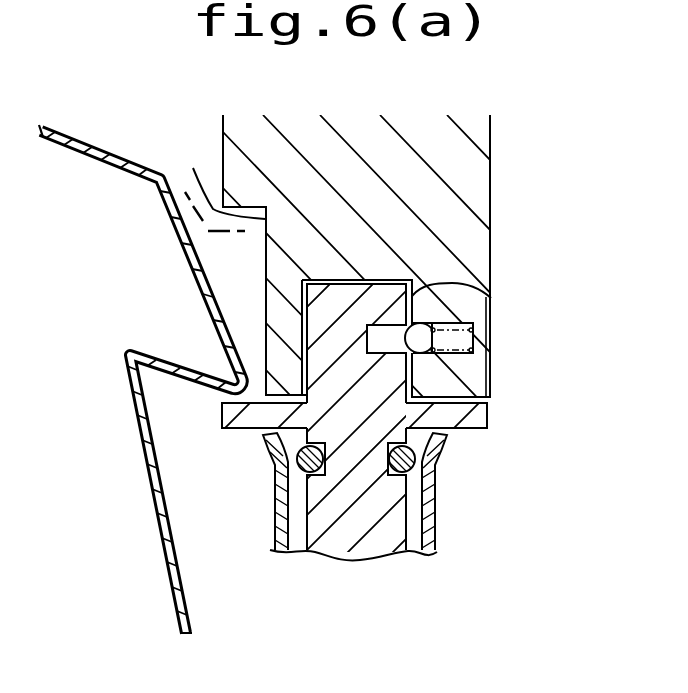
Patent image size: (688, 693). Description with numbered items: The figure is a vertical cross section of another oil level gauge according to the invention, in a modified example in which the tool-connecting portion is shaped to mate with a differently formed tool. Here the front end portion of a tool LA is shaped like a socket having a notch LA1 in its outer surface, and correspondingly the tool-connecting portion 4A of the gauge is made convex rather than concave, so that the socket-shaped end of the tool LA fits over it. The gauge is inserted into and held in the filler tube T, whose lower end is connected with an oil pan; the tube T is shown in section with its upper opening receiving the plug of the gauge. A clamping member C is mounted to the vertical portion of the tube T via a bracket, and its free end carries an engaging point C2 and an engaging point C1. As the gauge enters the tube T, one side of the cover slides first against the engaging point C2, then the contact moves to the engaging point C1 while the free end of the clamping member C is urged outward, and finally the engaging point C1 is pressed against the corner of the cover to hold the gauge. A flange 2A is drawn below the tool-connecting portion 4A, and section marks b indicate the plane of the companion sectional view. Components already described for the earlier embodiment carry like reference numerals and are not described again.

The tool LA is at (475, 180).
The notch LA1 is at (212, 186).
The tool-connecting portion 4A is at (492, 300).
The flange 2A is at (487, 417).
The filler tube T is at (430, 493).
The clamping member C is at (88, 155).
The engaging point C1 is at (238, 378).
The engaging point C2 is at (155, 185).
The section line b- b is at (137, 126).